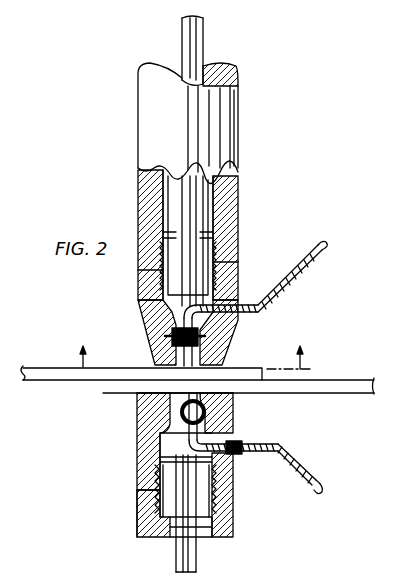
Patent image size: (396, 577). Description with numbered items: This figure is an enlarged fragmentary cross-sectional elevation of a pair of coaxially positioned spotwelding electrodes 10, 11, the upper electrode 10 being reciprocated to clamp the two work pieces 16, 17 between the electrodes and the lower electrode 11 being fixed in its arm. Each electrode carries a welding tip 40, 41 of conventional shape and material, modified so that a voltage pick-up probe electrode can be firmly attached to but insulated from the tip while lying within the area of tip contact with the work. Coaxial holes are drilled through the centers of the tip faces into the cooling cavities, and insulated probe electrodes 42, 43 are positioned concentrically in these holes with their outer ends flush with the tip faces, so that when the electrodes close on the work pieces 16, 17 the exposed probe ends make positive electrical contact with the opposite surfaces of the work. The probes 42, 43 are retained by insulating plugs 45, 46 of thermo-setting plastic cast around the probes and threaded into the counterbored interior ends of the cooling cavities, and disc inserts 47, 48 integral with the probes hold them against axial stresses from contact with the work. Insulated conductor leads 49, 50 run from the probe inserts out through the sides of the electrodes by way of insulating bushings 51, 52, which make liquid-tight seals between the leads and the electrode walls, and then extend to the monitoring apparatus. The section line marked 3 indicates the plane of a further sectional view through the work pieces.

The spotwelding electrode 10 is at (139, 143).
The spotwelding electrode 11 is at (138, 524).
The work piece 16 is at (52, 367).
The work piece 17 is at (333, 393).
The section line 3- 3 is at (195, 348).
The welding tip 40 is at (140, 290).
The welding tip 41 is at (138, 462).
The probe electrode 42 is at (157, 357).
The probe electrode 43 is at (140, 399).
The insulating plug 45 is at (222, 344).
The insulating plug 46 is at (228, 428).
The disc insert 47 is at (228, 400).
The disc insert 48 is at (232, 328).
The insulated conductor lead 49 is at (322, 492).
The insulated conductor lead 50 is at (328, 244).
The insulating bushing 51 is at (238, 450).
The insulating bushing 52 is at (241, 305).